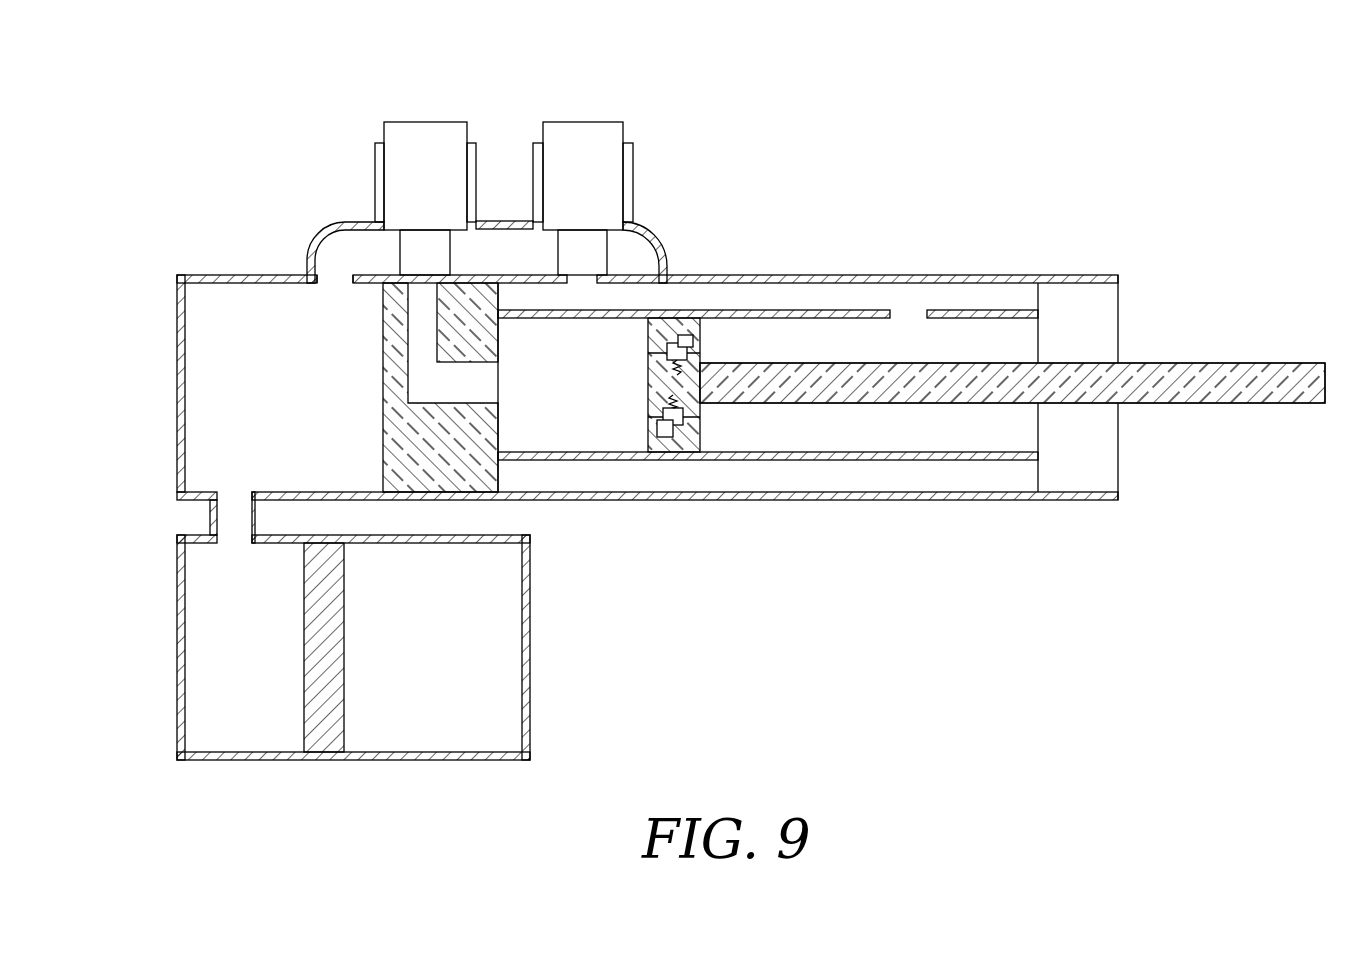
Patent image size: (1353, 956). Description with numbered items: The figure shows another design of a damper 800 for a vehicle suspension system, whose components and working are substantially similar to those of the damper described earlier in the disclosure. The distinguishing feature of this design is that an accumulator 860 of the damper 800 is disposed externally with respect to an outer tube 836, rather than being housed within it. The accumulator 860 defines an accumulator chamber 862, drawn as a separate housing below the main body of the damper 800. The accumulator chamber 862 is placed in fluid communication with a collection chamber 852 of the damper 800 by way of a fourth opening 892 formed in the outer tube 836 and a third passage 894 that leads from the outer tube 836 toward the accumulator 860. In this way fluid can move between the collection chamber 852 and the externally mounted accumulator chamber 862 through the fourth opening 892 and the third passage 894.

The damper 800 is at (1017, 72).
The outer tube 836 is at (1078, 275).
The collection chamber 852 is at (380, 255).
The fourth opening 892 is at (333, 299).
The third passage 894 is at (228, 515).
The accumulator chamber 862 is at (249, 617).
The accumulator 860 is at (228, 760).